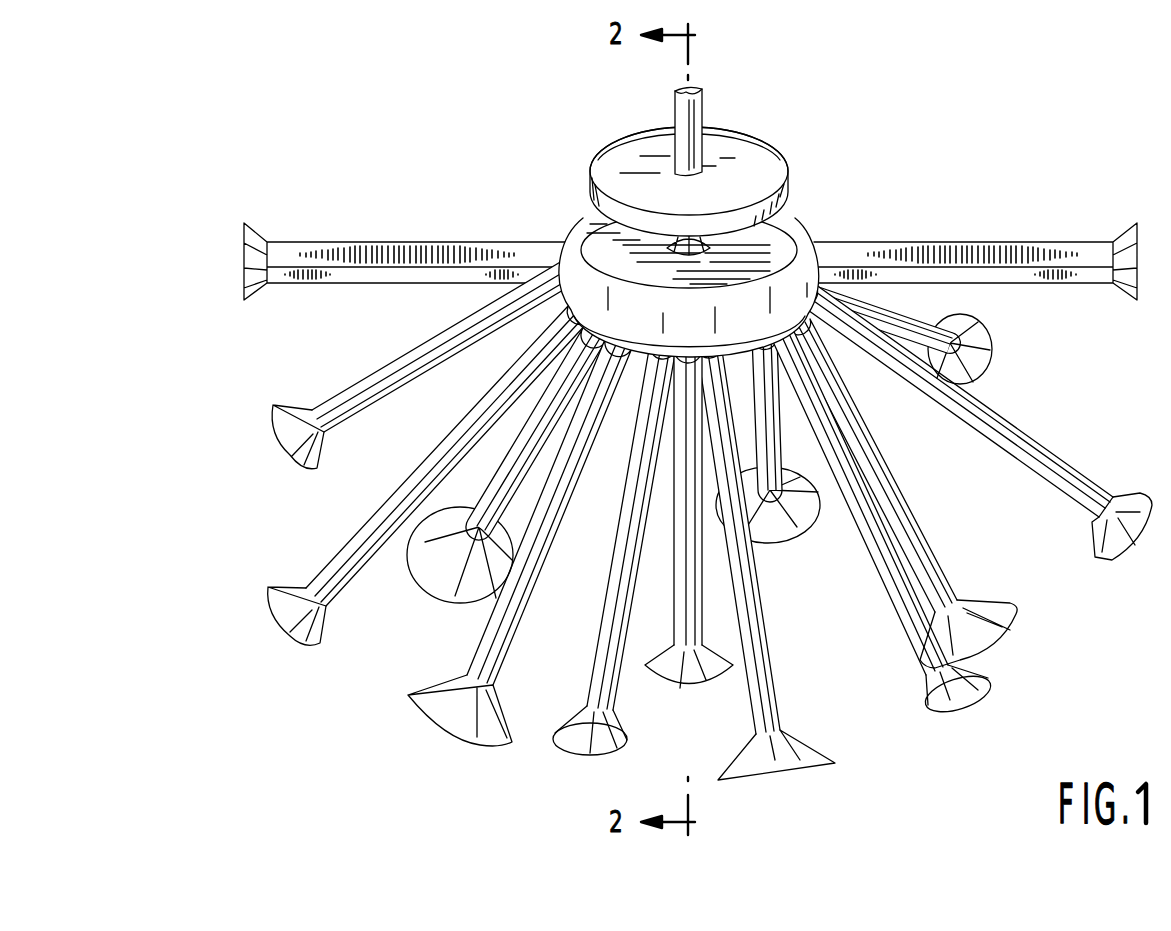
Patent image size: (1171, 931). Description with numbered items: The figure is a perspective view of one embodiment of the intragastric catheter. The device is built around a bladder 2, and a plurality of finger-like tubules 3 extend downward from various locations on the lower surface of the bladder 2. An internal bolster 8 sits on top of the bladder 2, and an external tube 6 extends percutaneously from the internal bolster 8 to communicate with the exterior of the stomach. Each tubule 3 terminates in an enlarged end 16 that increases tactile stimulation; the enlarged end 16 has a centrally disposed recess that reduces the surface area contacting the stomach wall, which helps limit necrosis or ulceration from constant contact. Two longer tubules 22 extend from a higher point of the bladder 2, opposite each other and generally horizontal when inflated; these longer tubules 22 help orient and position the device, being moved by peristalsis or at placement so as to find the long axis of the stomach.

The bladder 2 is at (583, 222).
The finger-like tubules 3 is at (350, 550).
The external tube 6 is at (693, 115).
The internal bolster 8 is at (760, 167).
The enlarged end 16 is at (283, 418).
The longer tubules 22 is at (336, 252).